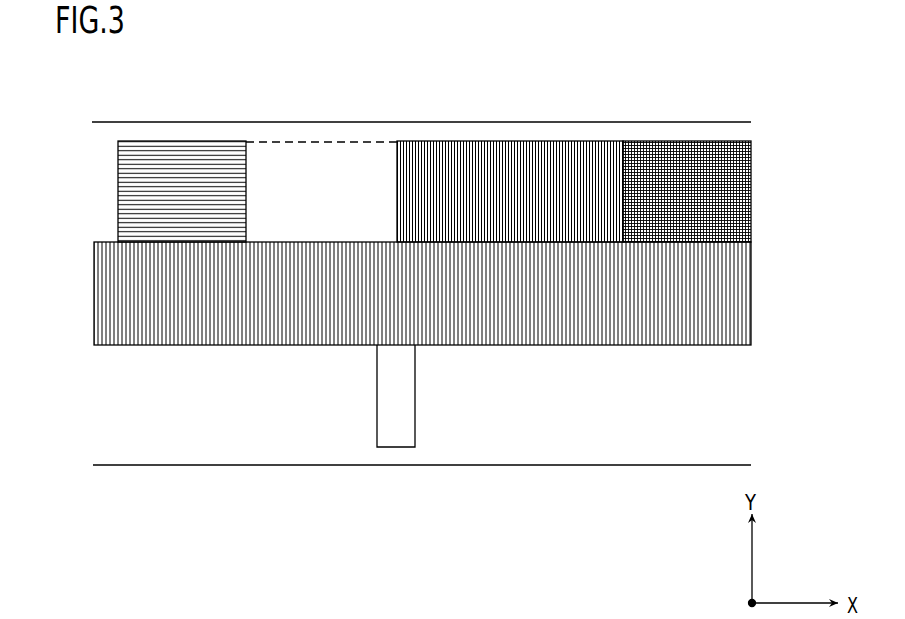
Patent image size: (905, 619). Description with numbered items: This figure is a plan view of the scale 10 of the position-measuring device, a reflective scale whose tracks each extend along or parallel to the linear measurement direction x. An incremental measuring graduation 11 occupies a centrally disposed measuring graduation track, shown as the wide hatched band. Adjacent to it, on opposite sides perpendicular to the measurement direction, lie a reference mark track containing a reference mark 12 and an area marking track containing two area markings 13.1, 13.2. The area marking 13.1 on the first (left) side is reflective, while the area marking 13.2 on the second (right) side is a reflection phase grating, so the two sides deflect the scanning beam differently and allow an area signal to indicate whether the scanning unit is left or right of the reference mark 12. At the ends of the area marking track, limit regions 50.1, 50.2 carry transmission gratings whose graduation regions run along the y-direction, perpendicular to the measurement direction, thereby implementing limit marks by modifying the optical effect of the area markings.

The scale 10 is at (93, 438).
The incremental measuring graduation 11 is at (123, 293).
The reference mark 12 is at (392, 427).
The area marking 13.1 is at (347, 168).
The area marking 13.2 is at (540, 170).
The limit region 50.1 is at (182, 167).
The limit region 50.2 is at (703, 142).